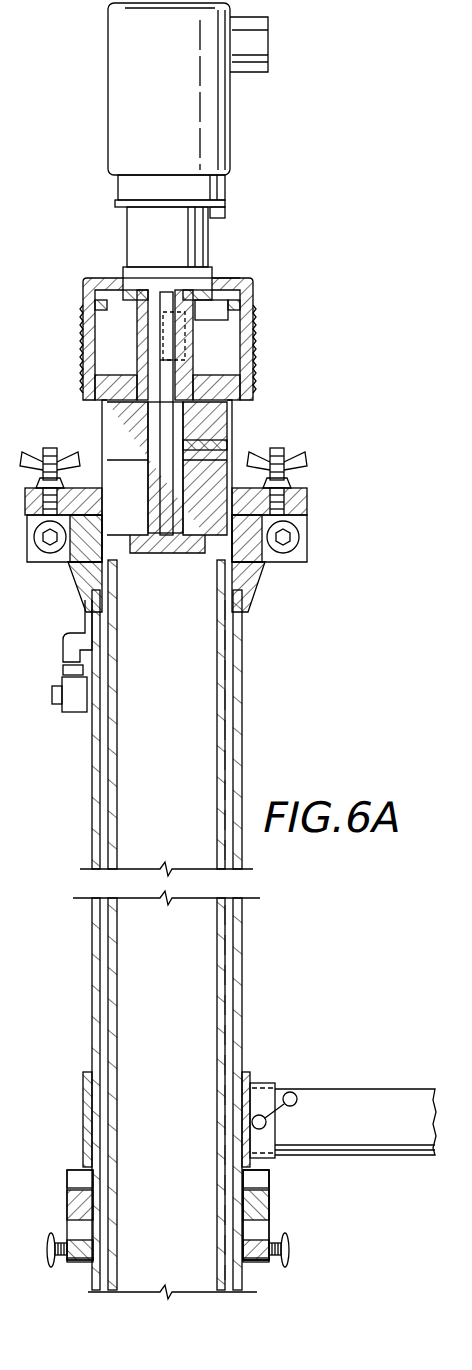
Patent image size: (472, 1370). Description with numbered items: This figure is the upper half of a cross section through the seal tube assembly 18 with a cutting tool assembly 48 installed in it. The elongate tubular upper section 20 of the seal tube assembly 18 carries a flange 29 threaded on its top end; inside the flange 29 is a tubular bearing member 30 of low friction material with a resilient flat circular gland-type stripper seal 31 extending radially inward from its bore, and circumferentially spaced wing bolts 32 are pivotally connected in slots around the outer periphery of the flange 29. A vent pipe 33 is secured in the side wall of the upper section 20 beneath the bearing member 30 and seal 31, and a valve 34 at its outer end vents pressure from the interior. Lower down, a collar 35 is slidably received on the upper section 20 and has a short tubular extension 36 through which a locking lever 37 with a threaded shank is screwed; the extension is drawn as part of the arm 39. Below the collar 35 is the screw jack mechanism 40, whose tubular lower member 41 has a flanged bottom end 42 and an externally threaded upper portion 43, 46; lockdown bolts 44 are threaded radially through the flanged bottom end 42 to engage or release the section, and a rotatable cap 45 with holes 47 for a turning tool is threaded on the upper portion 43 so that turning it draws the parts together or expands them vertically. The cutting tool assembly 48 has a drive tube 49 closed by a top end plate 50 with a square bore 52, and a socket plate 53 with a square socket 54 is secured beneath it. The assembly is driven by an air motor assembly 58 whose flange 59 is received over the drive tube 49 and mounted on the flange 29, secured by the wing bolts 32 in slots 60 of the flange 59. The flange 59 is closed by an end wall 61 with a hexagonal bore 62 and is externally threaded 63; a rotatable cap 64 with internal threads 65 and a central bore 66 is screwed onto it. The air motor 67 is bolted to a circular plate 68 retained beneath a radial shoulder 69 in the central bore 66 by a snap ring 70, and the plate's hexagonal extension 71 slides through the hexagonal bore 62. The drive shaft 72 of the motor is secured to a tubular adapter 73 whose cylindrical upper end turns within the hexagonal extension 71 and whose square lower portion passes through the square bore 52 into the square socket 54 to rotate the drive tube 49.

The air motor 67 is at (162, 96).
The air motor assembly 58 is at (248, 208).
The central bore 66 is at (123, 272).
The circular plate 68 is at (100, 296).
The radial shoulder 69 is at (236, 288).
The rotatable cap 64 is at (82, 314).
The snap ring 70 is at (230, 318).
The internal threads 65 is at (82, 345).
The hexagonal extension 71 is at (200, 326).
The external threads 63 is at (90, 395).
The drive shaft 72 is at (185, 345).
The end wall 61 is at (238, 376).
The hexagonal bore 62 is at (238, 384).
The wing bolts 32 is at (50, 448).
The square bore 52 is at (150, 432).
The top end plate 50 is at (220, 412).
The tubular adapter 73 is at (195, 470).
The slots 60 is at (302, 500).
The flange 59 is at (306, 512).
The flange 29 is at (306, 556).
The tubular bearing member 30 is at (80, 568).
The square socket 54 is at (165, 515).
The socket plate 53 is at (196, 530).
The stripper seal 31 is at (248, 575).
The vent pipe 33 is at (68, 638).
The cutting tool assembly 48 is at (246, 660).
The upper section 20 is at (236, 704).
The seal tube assembly 18 is at (248, 750).
The valve 34 is at (74, 705).
The drive tube 49 is at (236, 930).
The collar 35 is at (80, 1075).
The short tubular extension 36 is at (262, 1084).
The support arm 39 is at (360, 1096).
The locking lever 37 is at (268, 1122).
The holes 47 is at (70, 1178).
The rotatable cap 45 is at (66, 1204).
The externally threaded upper portion 43 is at (297, 1215).
The lower clamp member 46 is at (262, 1210).
The lockdown bolts 44 is at (48, 1242).
The screw jack mechanism 40 is at (284, 1216).
The flanged bottom end 42 is at (80, 1262).
The tubular lower member 41 is at (258, 1264).